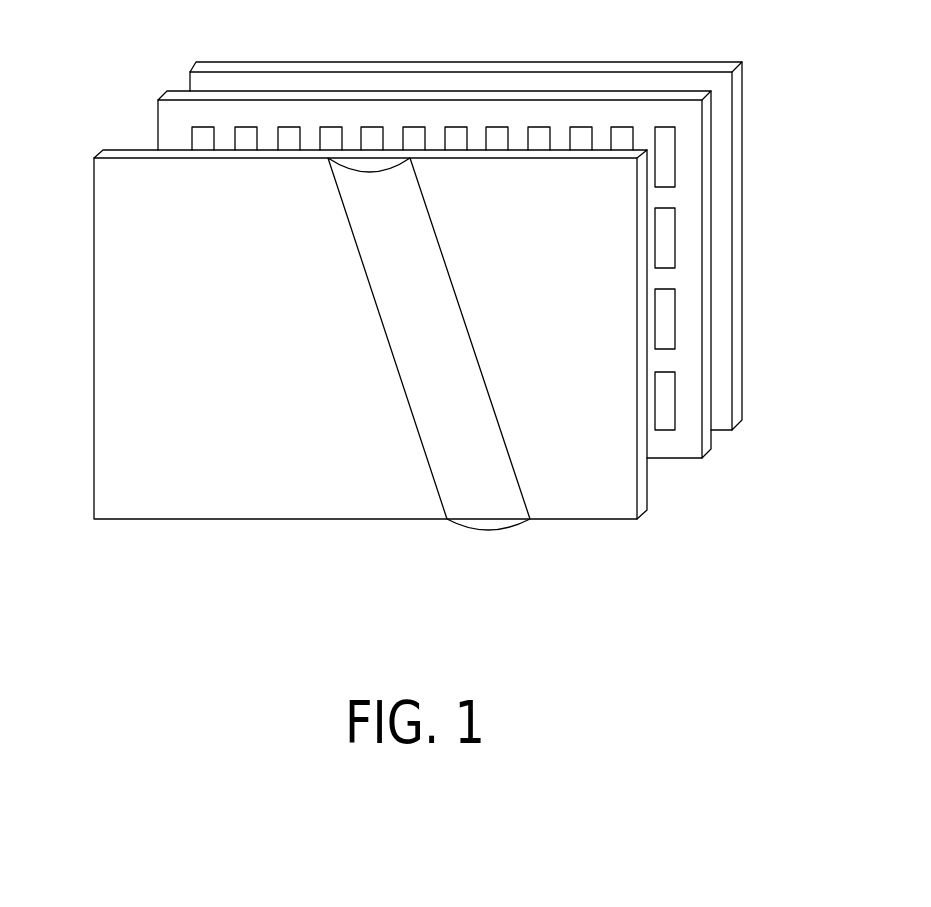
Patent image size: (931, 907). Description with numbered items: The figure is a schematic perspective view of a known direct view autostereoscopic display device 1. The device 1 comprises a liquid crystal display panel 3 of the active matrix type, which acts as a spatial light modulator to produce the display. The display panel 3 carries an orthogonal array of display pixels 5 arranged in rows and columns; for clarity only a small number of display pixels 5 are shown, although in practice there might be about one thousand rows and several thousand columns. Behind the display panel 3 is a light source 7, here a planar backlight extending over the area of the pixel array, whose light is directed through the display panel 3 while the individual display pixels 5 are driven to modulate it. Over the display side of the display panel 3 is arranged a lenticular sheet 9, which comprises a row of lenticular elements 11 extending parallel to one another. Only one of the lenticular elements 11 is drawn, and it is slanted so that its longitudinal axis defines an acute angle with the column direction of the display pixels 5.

The autostereoscopic display device 1 is at (82, 101).
The liquid crystal display panel 3 is at (712, 456).
The display pixels 5 is at (666, 171).
The light source 7 is at (745, 429).
The lenticular sheet 9 is at (648, 518).
The lenticular elements 11 is at (470, 500).